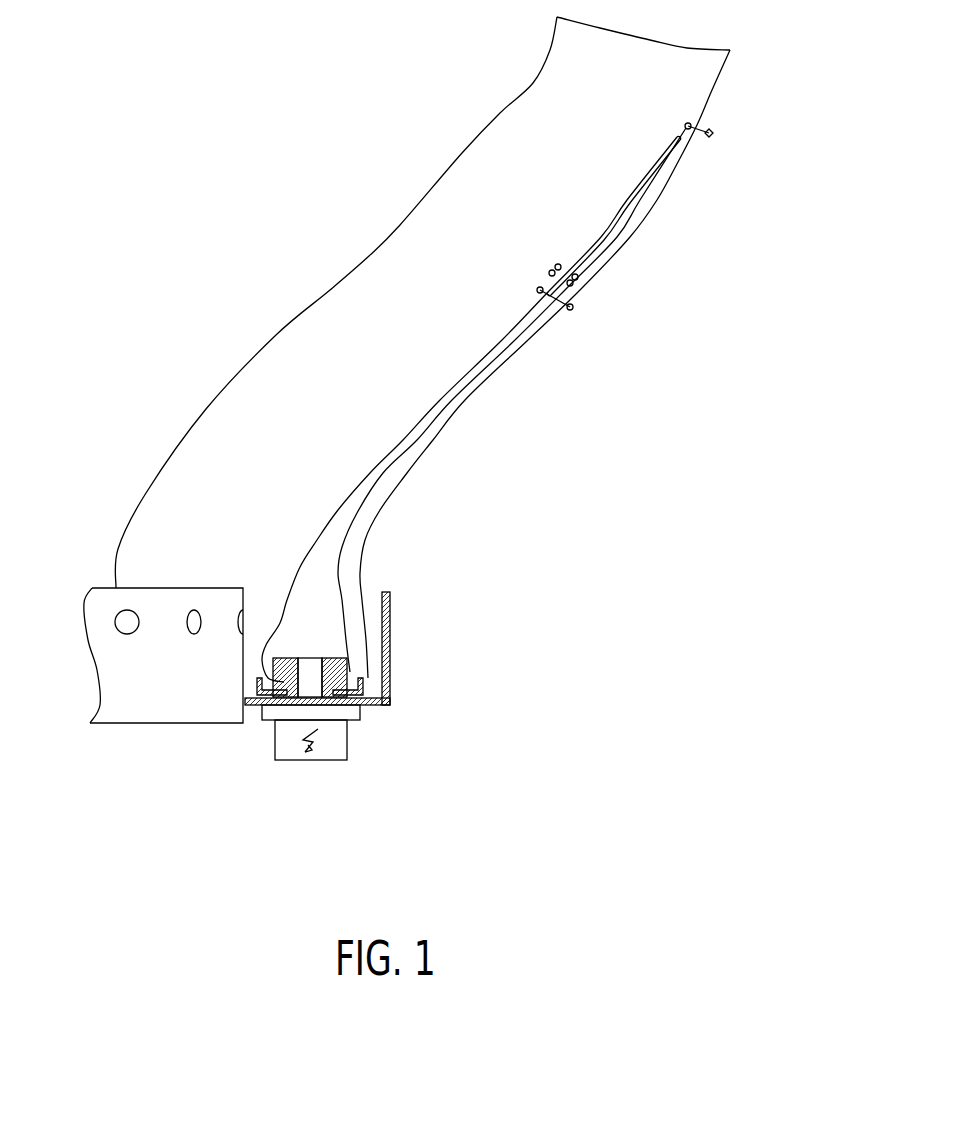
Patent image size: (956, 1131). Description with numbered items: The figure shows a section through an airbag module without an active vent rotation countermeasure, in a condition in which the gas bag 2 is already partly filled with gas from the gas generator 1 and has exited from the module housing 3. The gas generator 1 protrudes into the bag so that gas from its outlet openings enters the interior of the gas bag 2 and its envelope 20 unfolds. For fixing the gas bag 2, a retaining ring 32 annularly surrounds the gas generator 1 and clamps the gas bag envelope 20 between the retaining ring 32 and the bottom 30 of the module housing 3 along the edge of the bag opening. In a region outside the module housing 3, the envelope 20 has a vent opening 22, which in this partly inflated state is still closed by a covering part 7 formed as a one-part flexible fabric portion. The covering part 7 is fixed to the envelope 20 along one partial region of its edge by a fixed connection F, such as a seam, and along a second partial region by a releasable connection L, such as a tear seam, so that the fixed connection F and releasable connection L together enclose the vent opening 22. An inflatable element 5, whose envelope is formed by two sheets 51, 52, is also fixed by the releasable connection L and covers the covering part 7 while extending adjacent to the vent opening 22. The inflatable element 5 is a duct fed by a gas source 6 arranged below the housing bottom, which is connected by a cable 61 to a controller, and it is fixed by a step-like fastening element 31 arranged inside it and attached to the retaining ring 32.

The gas generator 1 is at (113, 675).
The gas bag 2 is at (455, 198).
The envelope 20 is at (718, 80).
The vent opening 22 is at (640, 225).
The covering part 7 is at (613, 243).
The fixed connection F is at (713, 133).
The releasable connection L is at (572, 306).
The inflatable element 5 is at (402, 487).
The sheet 51 is at (337, 510).
The sheet 52 is at (340, 567).
The module housing 3 is at (390, 630).
The bottom 30 is at (352, 674).
The fastening element 31 is at (293, 657).
The retaining ring 32 is at (365, 690).
The gas source 6 is at (297, 771).
The cable 61 is at (313, 827).